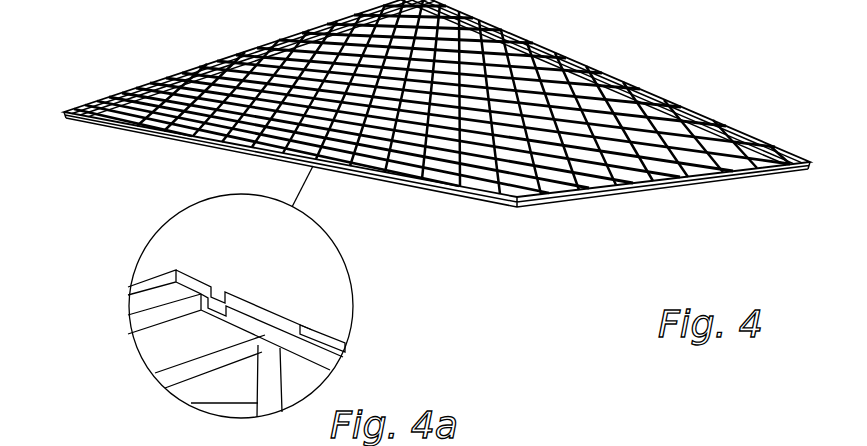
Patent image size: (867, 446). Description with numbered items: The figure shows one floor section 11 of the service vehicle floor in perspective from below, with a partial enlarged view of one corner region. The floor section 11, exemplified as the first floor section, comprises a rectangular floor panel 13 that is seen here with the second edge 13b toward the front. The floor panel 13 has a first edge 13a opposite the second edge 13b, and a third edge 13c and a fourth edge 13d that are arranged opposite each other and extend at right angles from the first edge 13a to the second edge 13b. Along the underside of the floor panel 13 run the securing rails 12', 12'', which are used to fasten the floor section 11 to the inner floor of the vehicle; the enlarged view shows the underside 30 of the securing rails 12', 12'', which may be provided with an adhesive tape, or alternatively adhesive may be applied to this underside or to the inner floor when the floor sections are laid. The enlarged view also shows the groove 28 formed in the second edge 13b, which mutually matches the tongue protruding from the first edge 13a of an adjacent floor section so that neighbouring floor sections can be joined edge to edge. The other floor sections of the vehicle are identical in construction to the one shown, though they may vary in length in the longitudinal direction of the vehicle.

In FIG. 4, the floor section 11 is at (437, 146).
In FIG. 4, the securing rail 12' is at (601, 114).
In FIG. 4, the securing rail 12'' is at (253, 58).
In FIG. 4, the floor panel 13 is at (578, 62).
In FIG. 4, the first edge 13a is at (145, 128).
In FIG. 4, the second edge 13b is at (707, 117).
In FIG. 4A, the second edge 13b is at (345, 343).
In FIG. 4, the third edge 13c is at (677, 207).
In FIG. 4A, the fourth edge 13d is at (255, 306).
In FIG. 4A, the groove 28 is at (332, 360).
In FIG. 4A, the underside of the securing rails 30 is at (146, 347).